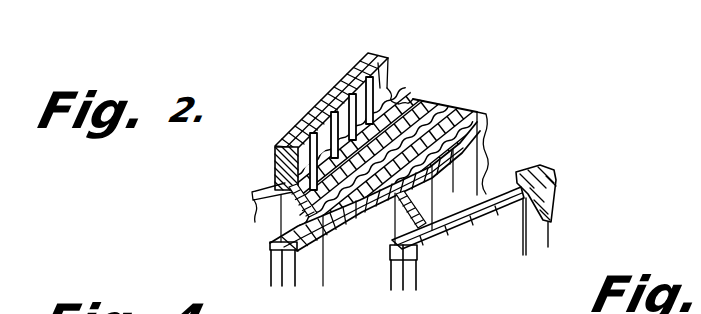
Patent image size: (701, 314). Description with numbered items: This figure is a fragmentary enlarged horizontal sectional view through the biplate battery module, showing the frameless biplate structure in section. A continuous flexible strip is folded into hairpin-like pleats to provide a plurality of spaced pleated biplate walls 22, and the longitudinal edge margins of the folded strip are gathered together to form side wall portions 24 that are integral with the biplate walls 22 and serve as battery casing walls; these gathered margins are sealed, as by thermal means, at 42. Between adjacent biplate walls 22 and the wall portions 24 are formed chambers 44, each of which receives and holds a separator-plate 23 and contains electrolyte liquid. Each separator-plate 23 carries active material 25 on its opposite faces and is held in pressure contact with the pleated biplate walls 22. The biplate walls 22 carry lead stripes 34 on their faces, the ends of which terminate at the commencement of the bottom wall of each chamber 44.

The pleated biplate wall 22 is at (322, 99).
The separator-plate 23 is at (424, 88).
The wall portion 24 is at (343, 248).
The active material 25 is at (453, 105).
The lead stripe 34 is at (455, 188).
The seal 42 is at (408, 277).
The chamber 44 is at (517, 180).